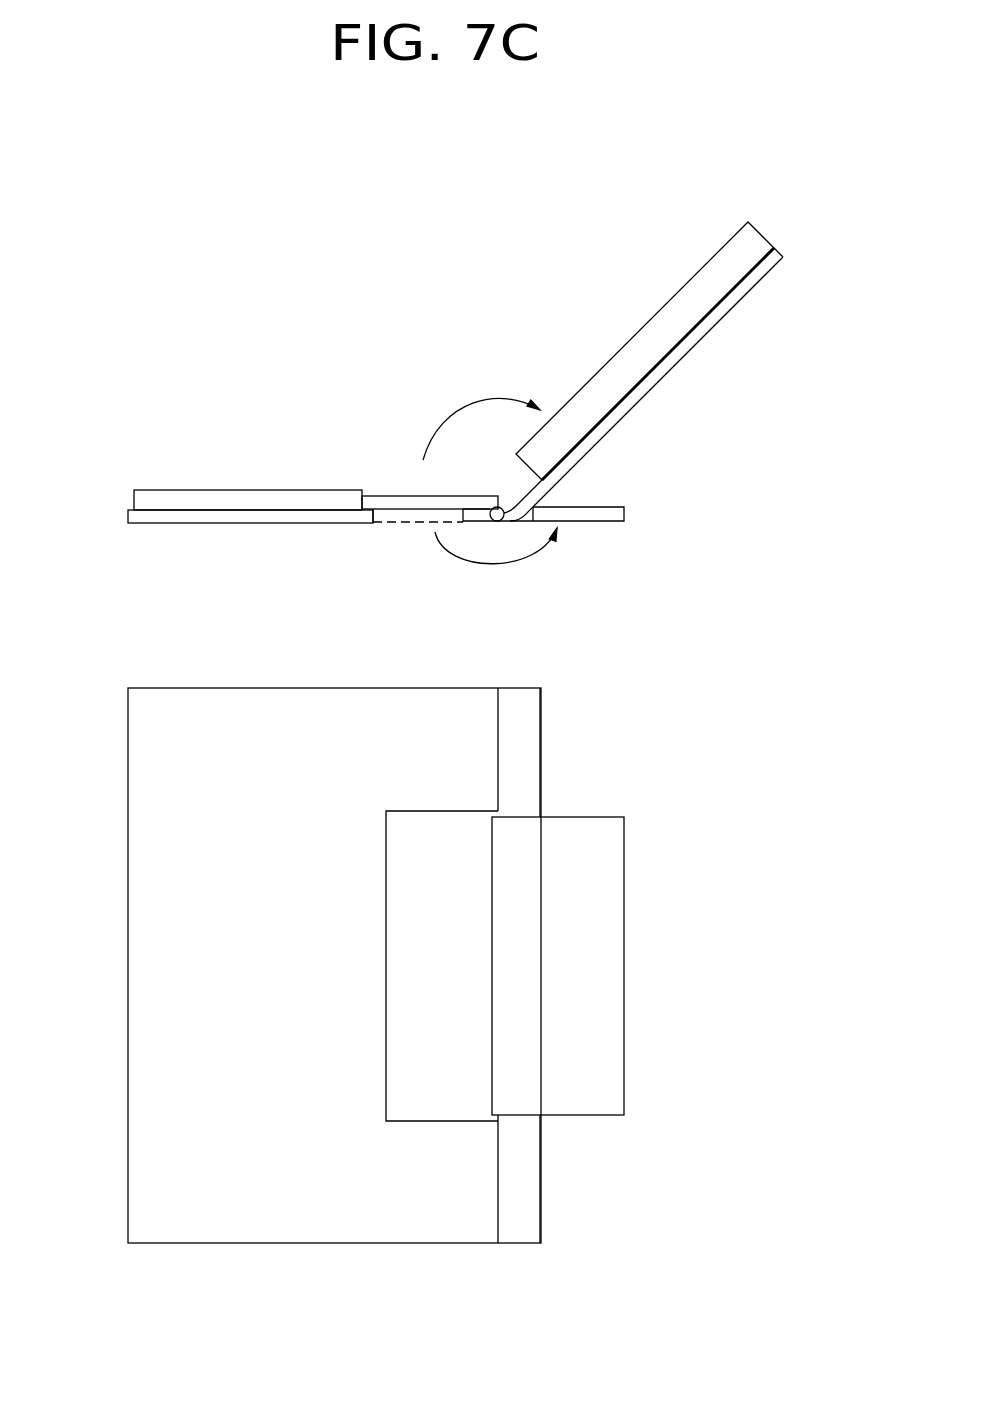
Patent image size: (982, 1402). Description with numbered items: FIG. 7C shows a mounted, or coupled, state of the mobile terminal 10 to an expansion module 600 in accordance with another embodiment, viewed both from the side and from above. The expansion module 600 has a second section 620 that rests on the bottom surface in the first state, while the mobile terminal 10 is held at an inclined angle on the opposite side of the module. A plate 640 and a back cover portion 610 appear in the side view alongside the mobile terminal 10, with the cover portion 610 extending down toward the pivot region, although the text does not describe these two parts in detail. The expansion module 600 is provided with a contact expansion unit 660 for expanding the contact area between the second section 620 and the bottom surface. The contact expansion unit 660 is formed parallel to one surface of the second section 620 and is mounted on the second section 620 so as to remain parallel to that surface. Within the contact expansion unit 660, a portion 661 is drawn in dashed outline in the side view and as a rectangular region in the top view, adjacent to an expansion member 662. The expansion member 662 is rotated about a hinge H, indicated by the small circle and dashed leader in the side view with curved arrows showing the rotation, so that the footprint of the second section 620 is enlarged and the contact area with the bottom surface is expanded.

The expansion module 600 is at (257, 313).
The mobile terminal 10 is at (625, 313).
The support plate 640 is at (227, 488).
The back cover 610 is at (688, 385).
The second section 620 is at (228, 529).
The first hinge member 661 is at (404, 527).
The contact expansion unit 660 is at (623, 686).
The expansion member 662 is at (615, 1069).
The hinge H is at (496, 522).